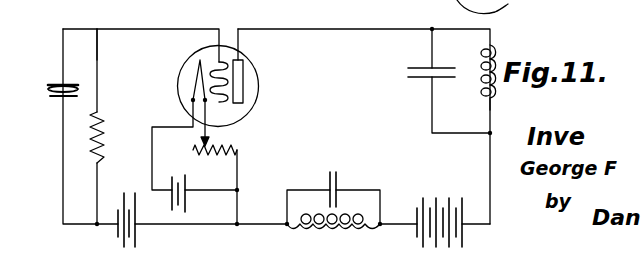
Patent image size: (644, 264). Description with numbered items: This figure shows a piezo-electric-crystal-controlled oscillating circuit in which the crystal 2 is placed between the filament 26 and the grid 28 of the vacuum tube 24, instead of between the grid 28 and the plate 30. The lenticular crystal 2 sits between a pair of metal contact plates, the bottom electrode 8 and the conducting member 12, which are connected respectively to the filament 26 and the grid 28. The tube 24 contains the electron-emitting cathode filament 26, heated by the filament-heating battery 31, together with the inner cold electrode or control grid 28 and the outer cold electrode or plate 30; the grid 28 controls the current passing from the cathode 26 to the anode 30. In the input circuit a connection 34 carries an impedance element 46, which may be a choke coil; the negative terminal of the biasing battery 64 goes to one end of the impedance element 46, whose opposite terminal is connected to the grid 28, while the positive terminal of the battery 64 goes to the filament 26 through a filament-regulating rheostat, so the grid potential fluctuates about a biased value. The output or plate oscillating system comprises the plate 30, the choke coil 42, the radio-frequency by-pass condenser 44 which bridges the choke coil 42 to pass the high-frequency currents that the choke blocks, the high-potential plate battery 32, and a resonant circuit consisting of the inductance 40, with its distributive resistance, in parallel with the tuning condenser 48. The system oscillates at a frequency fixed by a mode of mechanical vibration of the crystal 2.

The conducting member 12 is at (58, 82).
The lenticular plate 2 is at (48, 89).
The bottom of box 8 is at (57, 99).
The connection 34 is at (97, 36).
The impedance element 46 is at (93, 158).
The biasing battery 64 is at (135, 232).
The vacuum tube container 24 is at (197, 52).
The cathode filament 26 is at (193, 72).
The control grid 28 is at (222, 60).
The plate 30 is at (243, 73).
The filament-heating battery 31 is at (186, 205).
The choke coil 42 is at (296, 231).
The by-pass condenser 44 is at (338, 182).
The plate battery 32 is at (462, 233).
The tuning condenser 48 is at (418, 67).
The inductance 40 is at (497, 57).